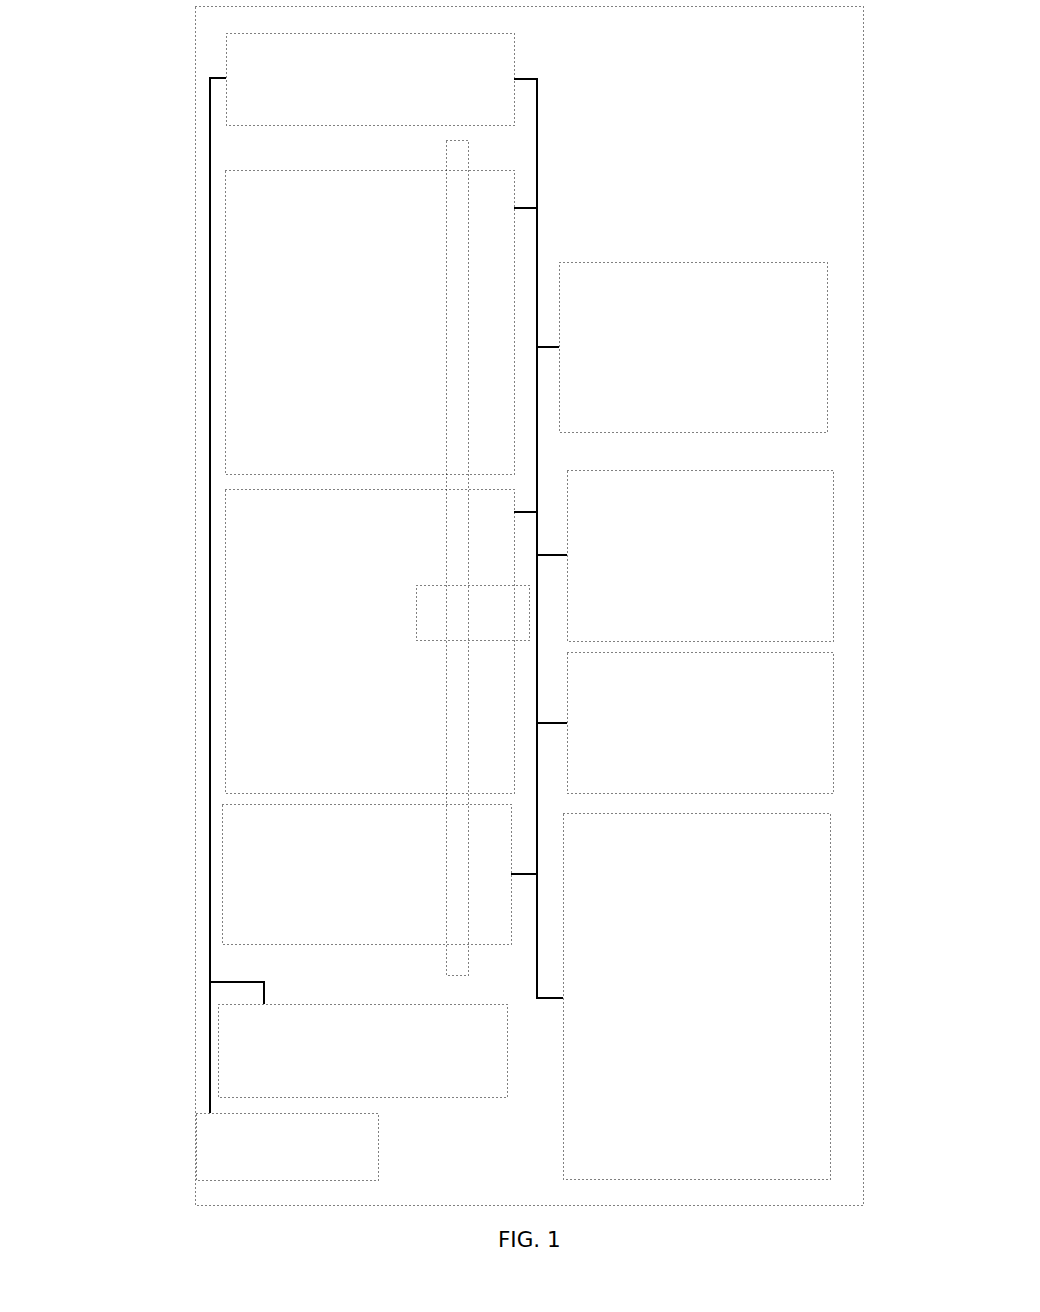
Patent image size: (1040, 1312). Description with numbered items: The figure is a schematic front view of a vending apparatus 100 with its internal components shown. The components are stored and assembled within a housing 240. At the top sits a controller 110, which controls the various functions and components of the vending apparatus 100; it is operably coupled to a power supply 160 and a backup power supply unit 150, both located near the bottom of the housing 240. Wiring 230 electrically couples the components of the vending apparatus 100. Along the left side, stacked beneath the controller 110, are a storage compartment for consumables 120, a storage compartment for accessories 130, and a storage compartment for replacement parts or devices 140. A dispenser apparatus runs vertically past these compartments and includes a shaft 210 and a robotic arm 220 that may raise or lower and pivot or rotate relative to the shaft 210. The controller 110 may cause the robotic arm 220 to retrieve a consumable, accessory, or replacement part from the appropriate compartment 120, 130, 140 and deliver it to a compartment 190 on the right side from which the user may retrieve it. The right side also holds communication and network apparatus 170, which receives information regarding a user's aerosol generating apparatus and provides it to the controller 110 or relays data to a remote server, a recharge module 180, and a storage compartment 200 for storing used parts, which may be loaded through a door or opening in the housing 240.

The vending apparatus 100 is at (135, 38).
The controller 110 is at (355, 87).
The storage compartment for consumables 120 is at (355, 330).
The storage compartment for accessories 130 is at (355, 649).
The storage compartment for replacement parts or devices 140 is at (352, 882).
The backup power supply unit 150 is at (348, 1058).
The power supply 160 is at (270, 1153).
The communication and network apparatus 170 is at (678, 356).
The recharge module 180 is at (685, 564).
The compartment 190 is at (685, 731).
The storage compartment for used parts 200 is at (682, 1005).
The shaft 210 is at (447, 367).
The robotic arm 220 is at (447, 625).
The wiring 230 is at (538, 109).
The housing 240 is at (864, 250).